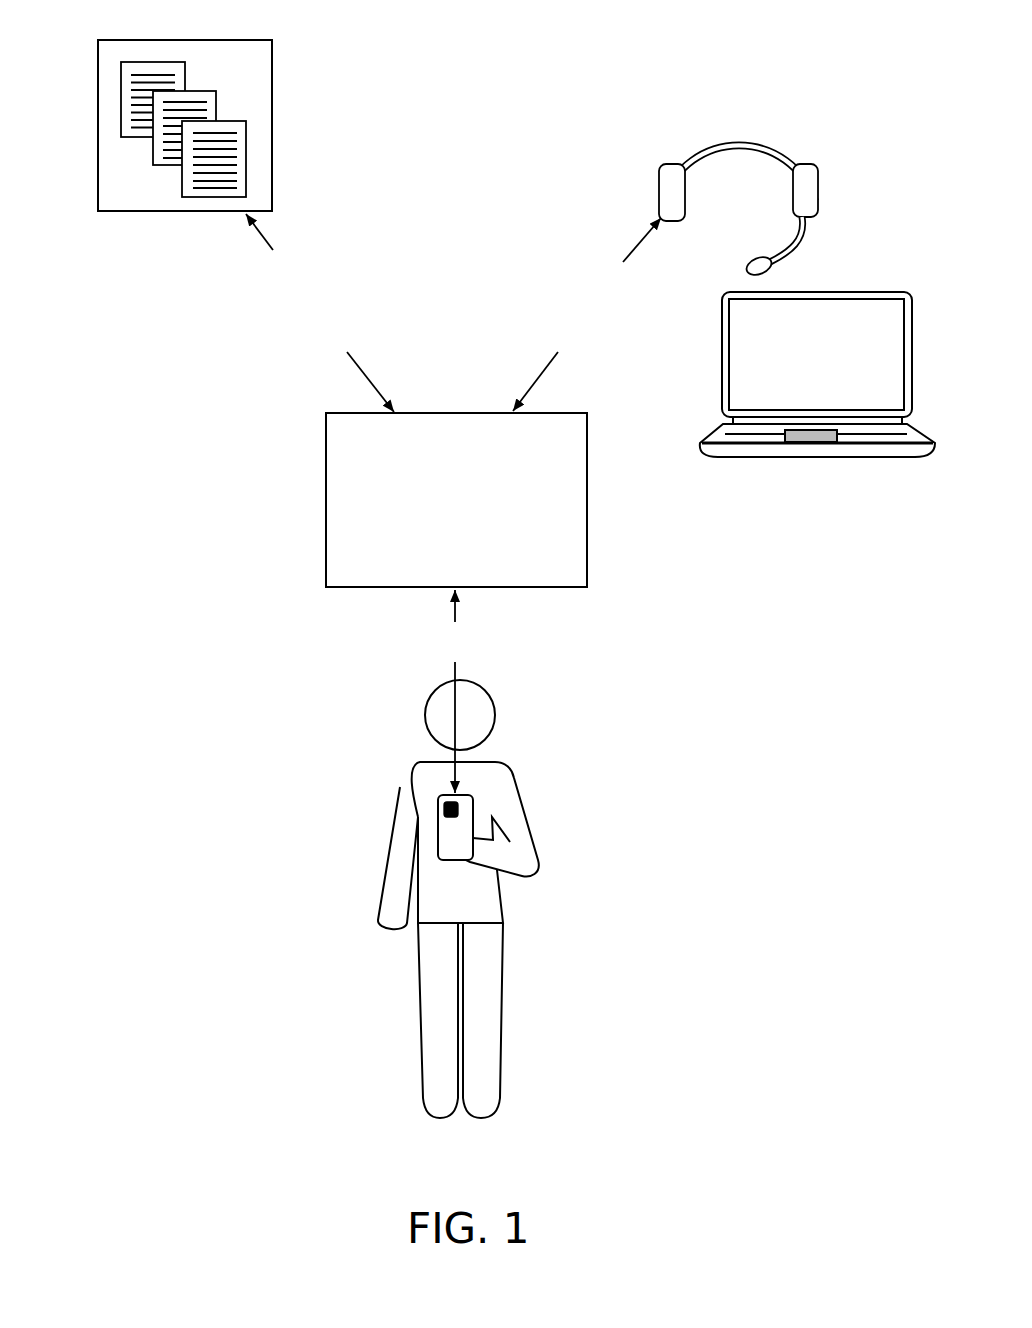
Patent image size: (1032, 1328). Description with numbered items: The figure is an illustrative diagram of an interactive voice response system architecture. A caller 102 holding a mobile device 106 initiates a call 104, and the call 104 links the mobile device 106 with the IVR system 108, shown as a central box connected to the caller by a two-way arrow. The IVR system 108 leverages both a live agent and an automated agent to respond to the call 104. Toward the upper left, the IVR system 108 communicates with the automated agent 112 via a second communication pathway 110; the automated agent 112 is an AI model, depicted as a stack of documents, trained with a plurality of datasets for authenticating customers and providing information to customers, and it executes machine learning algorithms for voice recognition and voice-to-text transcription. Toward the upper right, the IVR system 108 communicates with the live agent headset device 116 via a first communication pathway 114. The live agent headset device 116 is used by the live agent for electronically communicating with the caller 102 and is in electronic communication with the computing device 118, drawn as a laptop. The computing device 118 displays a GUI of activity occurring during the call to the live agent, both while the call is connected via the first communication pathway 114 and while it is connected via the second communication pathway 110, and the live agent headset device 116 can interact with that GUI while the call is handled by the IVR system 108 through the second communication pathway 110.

The caller 102 is at (400, 790).
The call 104 is at (473, 807).
The mobile device 106 is at (488, 639).
The IVR system 108 is at (326, 507).
The second communication pathway 110 is at (357, 362).
The automated agent 112 is at (98, 130).
The first communication pathway 114 is at (540, 373).
The live agent headset device 116 is at (815, 170).
The computing device 118 is at (866, 292).